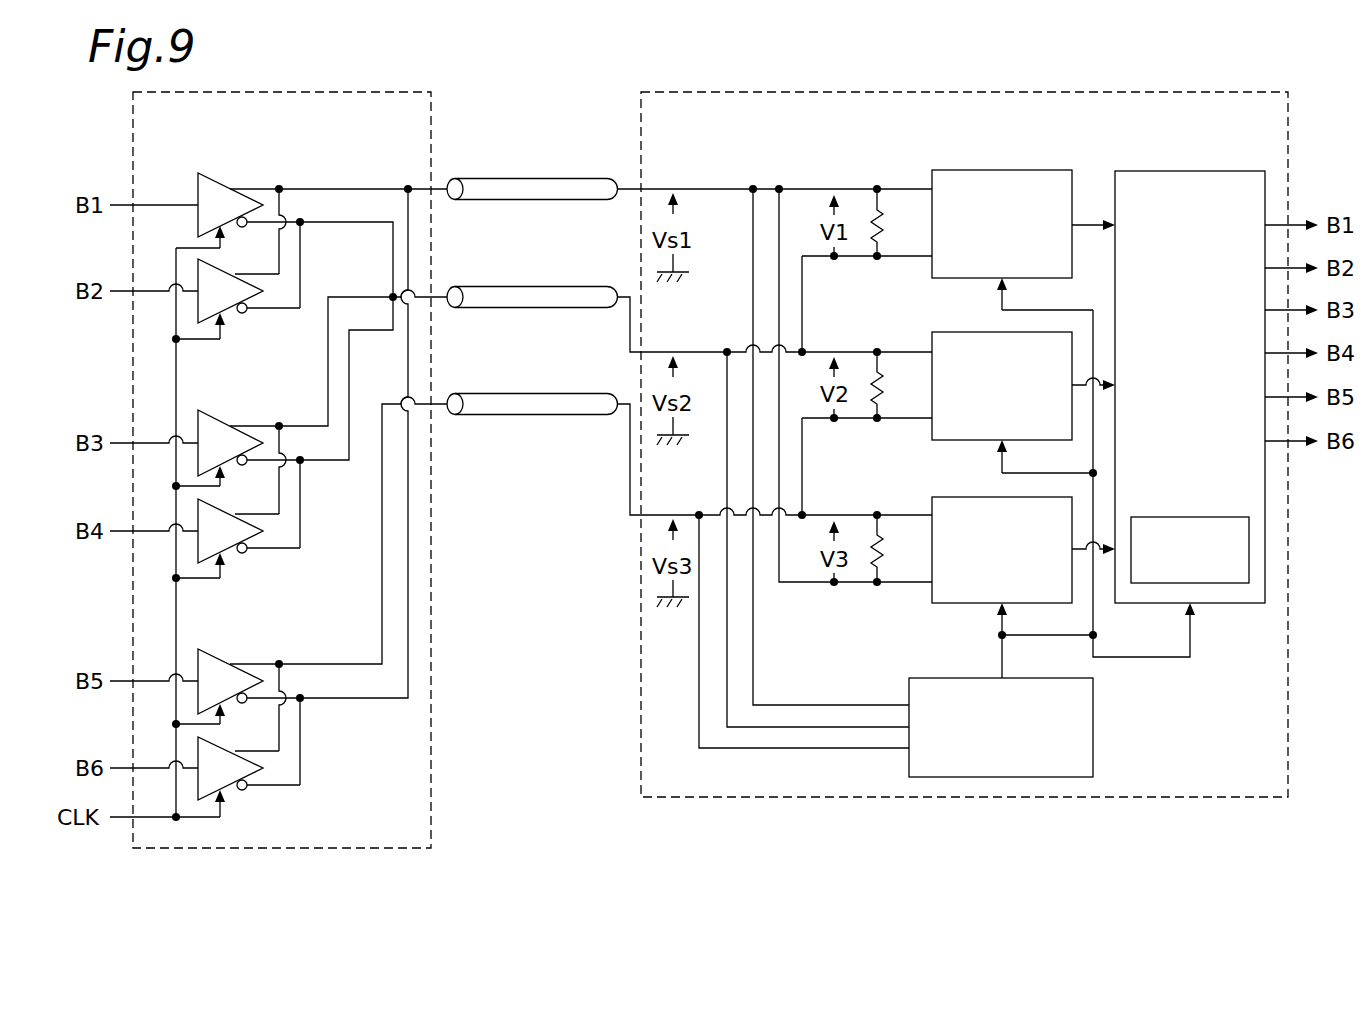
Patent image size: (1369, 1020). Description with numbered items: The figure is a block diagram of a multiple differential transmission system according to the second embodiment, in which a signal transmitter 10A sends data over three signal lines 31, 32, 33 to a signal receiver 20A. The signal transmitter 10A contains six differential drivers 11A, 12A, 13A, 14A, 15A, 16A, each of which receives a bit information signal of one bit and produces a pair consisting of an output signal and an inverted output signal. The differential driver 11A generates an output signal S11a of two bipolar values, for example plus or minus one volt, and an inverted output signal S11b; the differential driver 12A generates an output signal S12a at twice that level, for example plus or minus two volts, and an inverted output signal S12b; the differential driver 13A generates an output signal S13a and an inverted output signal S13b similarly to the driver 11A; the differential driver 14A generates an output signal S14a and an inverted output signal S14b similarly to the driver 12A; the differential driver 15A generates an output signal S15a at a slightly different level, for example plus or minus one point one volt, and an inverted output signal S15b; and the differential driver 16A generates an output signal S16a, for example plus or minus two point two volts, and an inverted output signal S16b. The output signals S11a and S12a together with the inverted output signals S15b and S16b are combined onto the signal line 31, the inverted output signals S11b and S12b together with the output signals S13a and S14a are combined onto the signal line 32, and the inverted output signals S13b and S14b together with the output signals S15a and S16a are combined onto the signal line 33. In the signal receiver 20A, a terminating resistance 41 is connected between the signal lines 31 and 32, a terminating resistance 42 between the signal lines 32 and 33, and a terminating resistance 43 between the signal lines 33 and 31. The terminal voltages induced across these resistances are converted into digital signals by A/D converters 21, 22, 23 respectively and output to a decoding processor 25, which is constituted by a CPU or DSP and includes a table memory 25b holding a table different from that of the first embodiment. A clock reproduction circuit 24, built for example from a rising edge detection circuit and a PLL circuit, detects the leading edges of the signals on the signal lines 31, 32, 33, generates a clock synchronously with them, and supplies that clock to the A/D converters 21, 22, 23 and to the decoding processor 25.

The signal transmitter 10A is at (262, 92).
The signal receiver 20A is at (898, 92).
The differential driver 11A is at (209, 174).
The differential driver 12A is at (221, 260).
The differential driver 13A is at (209, 411).
The differential driver 14A is at (221, 498).
The differential driver 15A is at (209, 650).
The differential driver 16A is at (221, 738).
The output signal S11a is at (276, 168).
The inverted output signal S11b is at (288, 215).
The output signal S12a is at (298, 270).
The inverted output signal S12b is at (268, 309).
The output signal S13a is at (276, 405).
The inverted output signal S13b is at (293, 473).
The output signal S14a is at (298, 527).
The inverted output signal S14b is at (268, 549).
The output signal S15a is at (276, 643).
The inverted output signal S15b is at (288, 690).
The output signal S16a is at (298, 745).
The inverted output signal S16b is at (268, 794).
The signal line 31 is at (498, 188).
The signal line 32 is at (498, 296).
The signal line 33 is at (498, 403).
The terminating resistance 41 is at (882, 208).
The terminating resistance 42 is at (882, 370).
The terminating resistance 43 is at (882, 533).
The A/D converter 21 is at (1005, 170).
The A/D converter 22 is at (952, 332).
The A/D converter 23 is at (952, 497).
The clock reproduction circuit 24 is at (947, 678).
The decoding processor 25 is at (1188, 171).
The table memory 25b is at (1188, 517).